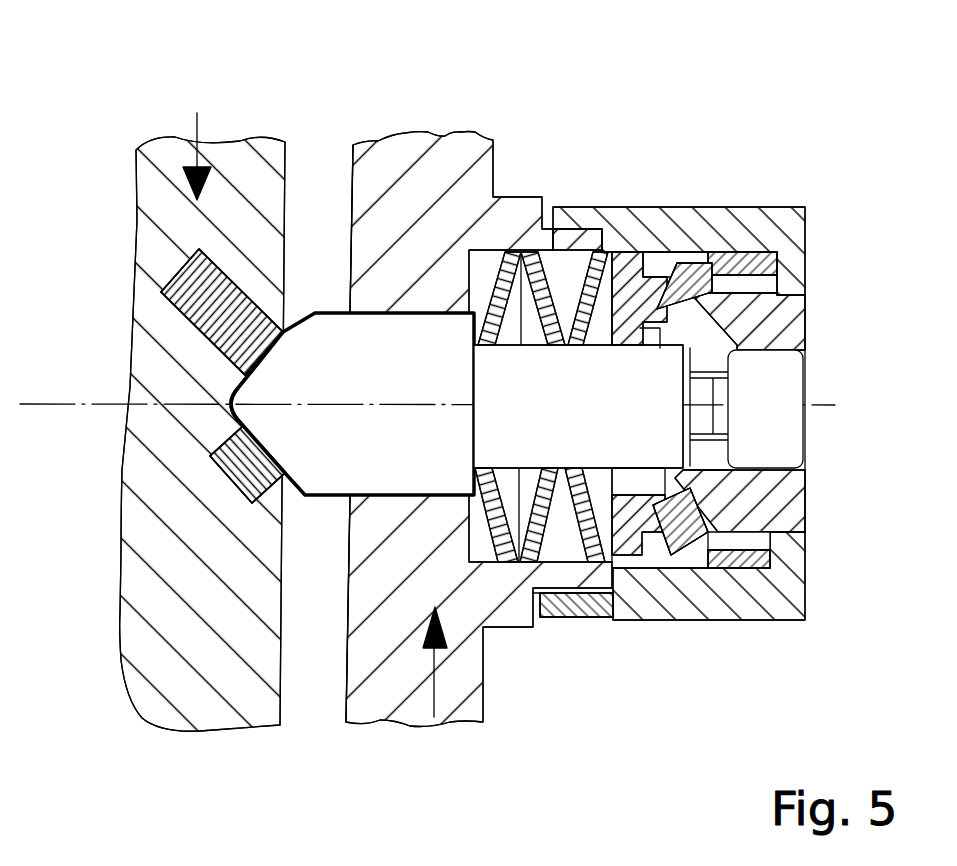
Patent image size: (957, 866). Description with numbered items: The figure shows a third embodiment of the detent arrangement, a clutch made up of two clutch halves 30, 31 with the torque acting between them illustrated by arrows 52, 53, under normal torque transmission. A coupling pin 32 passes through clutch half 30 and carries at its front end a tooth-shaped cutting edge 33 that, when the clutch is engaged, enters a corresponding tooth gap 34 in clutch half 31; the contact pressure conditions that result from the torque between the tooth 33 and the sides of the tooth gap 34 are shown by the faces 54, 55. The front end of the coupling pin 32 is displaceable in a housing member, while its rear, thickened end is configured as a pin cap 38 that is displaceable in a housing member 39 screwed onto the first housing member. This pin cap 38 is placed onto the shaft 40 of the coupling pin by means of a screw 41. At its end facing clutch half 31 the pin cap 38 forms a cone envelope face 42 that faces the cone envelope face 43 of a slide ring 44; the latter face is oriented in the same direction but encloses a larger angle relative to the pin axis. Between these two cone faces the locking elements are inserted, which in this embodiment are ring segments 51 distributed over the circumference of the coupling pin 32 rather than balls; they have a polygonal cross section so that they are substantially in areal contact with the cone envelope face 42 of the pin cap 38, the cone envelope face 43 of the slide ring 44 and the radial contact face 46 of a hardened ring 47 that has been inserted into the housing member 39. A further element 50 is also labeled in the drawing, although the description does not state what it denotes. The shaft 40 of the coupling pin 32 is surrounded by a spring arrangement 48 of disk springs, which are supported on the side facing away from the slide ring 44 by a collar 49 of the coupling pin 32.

The clutch half 30 is at (428, 153).
The clutch half 31 is at (166, 160).
The coupling pin 32 is at (390, 332).
The tooth-shaped cutting edge 33 is at (267, 430).
The tooth gap 34 is at (232, 404).
The pin cap 38 is at (700, 332).
The housing member 39 is at (750, 232).
The shaft 40 is at (565, 440).
The screw 41 is at (790, 428).
The cone envelope face 42 is at (702, 308).
The cone envelope face 43 is at (673, 498).
The slide ring 44 is at (633, 537).
The radial contact face 46 is at (750, 568).
The hardened ring 47 is at (762, 255).
The spring arrangement 48 is at (527, 562).
The collar 49 is at (350, 721).
The sealing ring 50 is at (750, 537).
The ring segments 51 is at (568, 248).
The arrow 52 is at (434, 717).
The arrow 53 is at (197, 113).
The face 54 is at (165, 280).
The face 55 is at (245, 503).